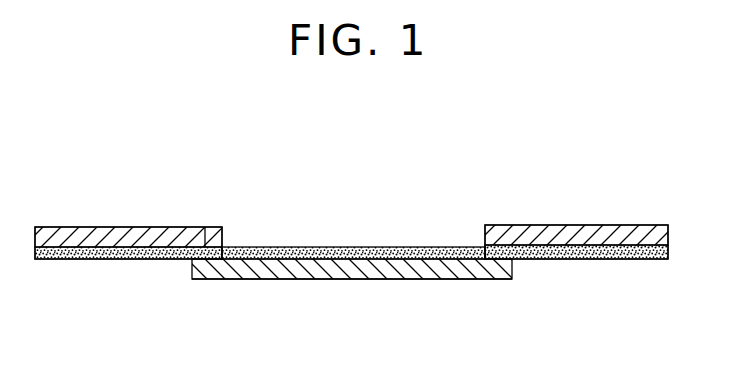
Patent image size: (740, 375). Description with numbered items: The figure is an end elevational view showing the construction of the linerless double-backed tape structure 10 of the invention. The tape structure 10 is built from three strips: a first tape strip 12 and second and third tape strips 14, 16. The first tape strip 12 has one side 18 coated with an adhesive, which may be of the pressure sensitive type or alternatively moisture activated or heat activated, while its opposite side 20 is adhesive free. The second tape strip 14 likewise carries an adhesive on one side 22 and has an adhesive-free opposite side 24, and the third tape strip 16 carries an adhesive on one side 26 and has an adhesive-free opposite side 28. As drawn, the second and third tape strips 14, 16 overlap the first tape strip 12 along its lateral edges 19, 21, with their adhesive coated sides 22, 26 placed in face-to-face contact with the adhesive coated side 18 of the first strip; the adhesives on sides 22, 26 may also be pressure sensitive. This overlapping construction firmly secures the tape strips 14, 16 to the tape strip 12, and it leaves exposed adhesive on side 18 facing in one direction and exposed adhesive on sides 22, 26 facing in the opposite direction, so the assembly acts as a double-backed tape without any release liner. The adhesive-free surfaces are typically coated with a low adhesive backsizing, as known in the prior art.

The linerless double-backed tape structure 10 is at (548, 125).
The first tape strip 12 is at (308, 268).
The second tape strip 14 is at (596, 233).
The third tape strip 16 is at (95, 227).
The adhesive coated side 18 is at (361, 250).
The lateral edge 19 is at (206, 246).
The opposite side 20 is at (441, 279).
The lateral edge 21 is at (497, 250).
The adhesive coated side 22 is at (618, 257).
The opposite side 24 is at (637, 225).
The adhesive coated side 26 is at (116, 260).
The opposite side 28 is at (138, 227).